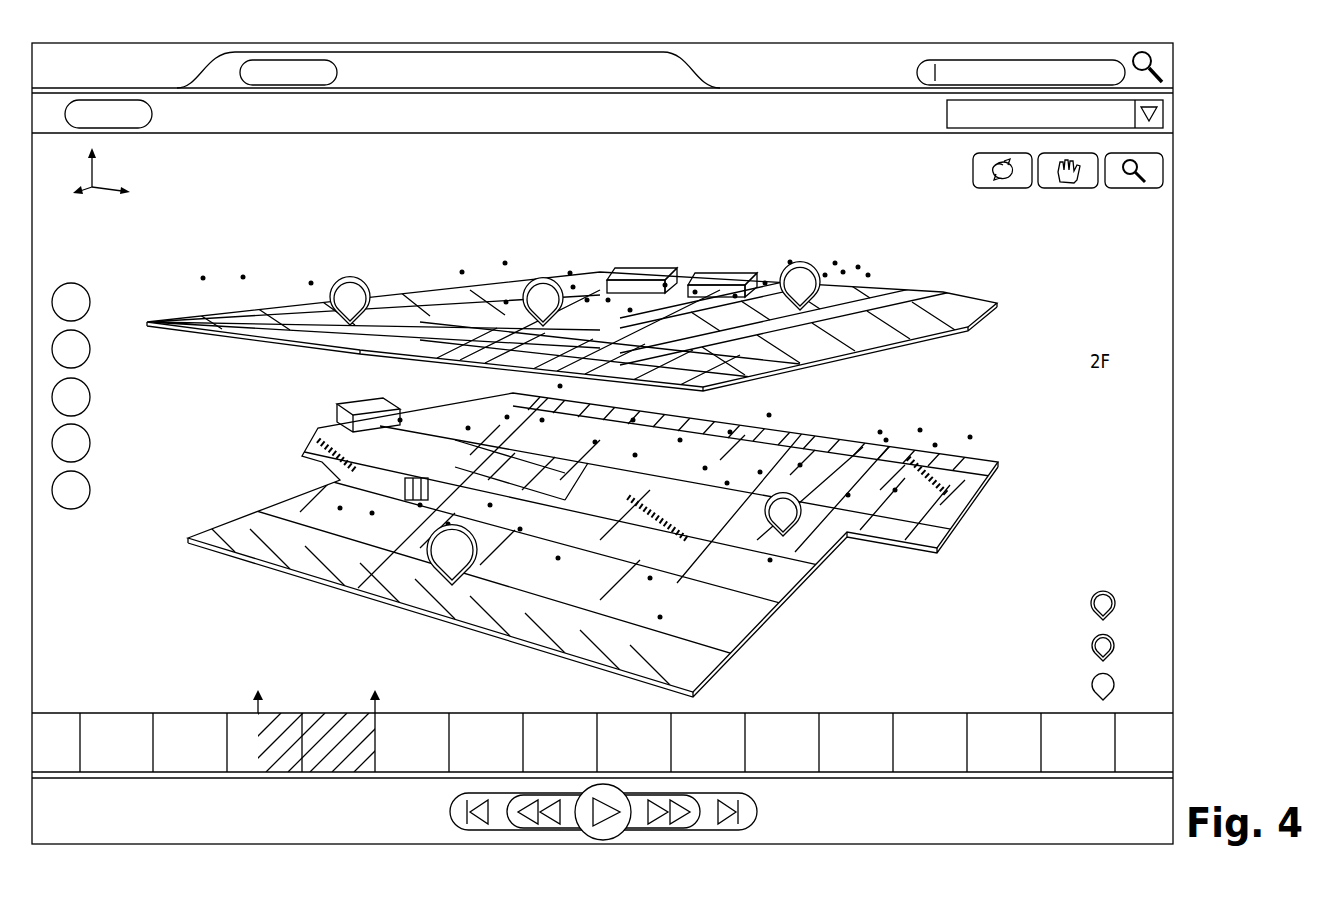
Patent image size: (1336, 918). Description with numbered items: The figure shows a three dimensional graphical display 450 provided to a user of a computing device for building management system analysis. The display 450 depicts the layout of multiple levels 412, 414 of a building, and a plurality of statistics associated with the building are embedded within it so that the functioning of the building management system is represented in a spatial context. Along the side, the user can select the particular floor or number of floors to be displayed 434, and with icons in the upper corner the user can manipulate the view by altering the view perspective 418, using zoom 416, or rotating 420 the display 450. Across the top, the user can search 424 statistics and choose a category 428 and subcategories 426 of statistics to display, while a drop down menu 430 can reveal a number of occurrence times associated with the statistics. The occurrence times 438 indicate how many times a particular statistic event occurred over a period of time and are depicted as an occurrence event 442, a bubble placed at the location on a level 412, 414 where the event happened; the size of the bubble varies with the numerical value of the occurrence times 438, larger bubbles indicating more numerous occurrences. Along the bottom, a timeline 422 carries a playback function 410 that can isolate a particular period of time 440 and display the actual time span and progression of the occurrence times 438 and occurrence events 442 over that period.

The playback function 410 is at (758, 812).
The level of a building 412 is at (1000, 303).
The level of a building 414 is at (1002, 462).
The zoom 416 is at (1134, 190).
The view perspective 418 is at (1067, 190).
The rotate 420 is at (1000, 190).
The timeline 422 is at (850, 712).
The search 424 is at (915, 70).
The subcategories 426 is at (468, 116).
The category 428 is at (678, 64).
The drop down menu 430 is at (946, 113).
The floor selection 434 is at (90, 349).
The occurrence times 438 is at (1040, 560).
The particular period of time 440 is at (290, 712).
The occurrence event 442 is at (350, 277).
The three dimensional graphical display 450 is at (1192, 111).